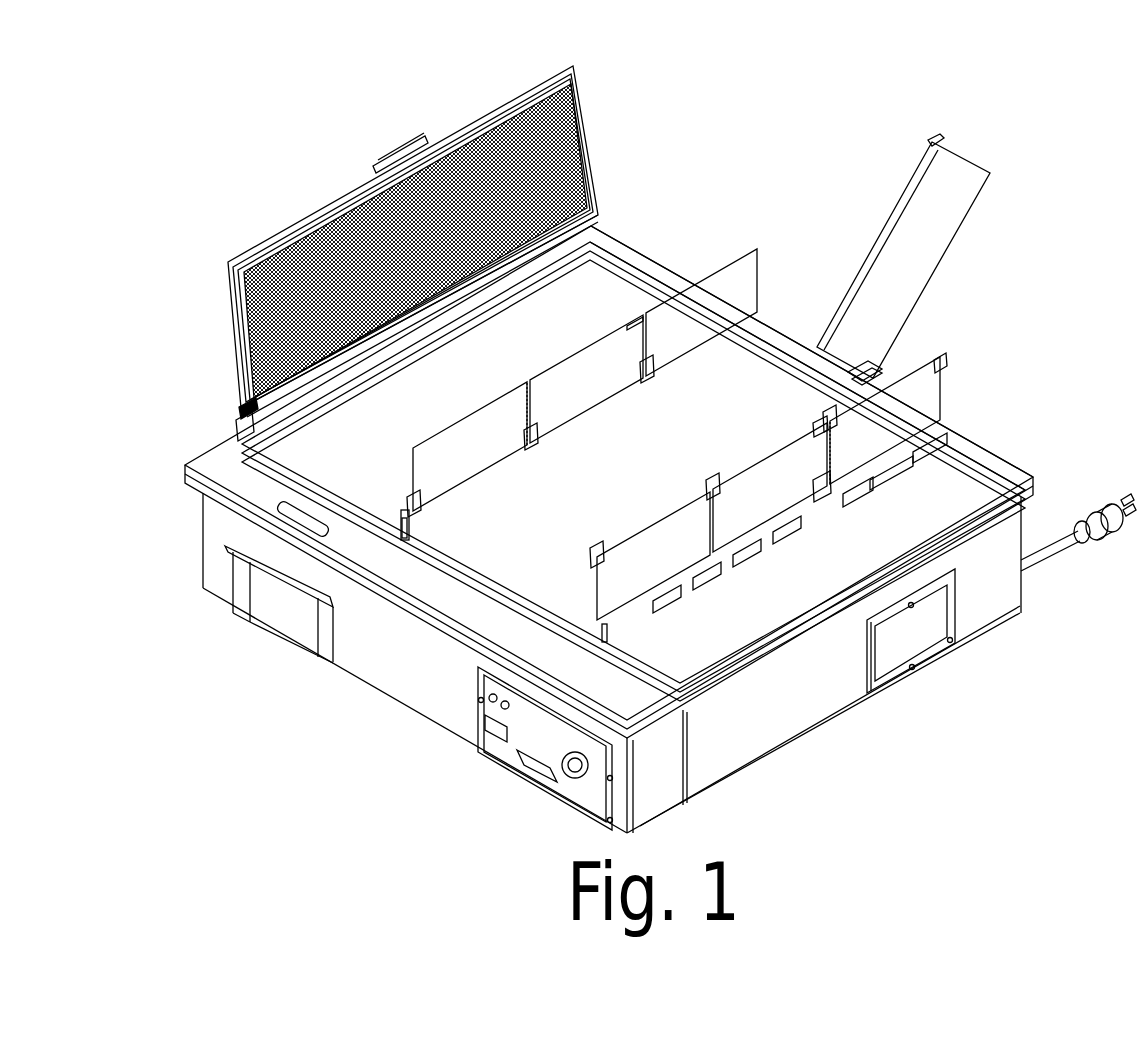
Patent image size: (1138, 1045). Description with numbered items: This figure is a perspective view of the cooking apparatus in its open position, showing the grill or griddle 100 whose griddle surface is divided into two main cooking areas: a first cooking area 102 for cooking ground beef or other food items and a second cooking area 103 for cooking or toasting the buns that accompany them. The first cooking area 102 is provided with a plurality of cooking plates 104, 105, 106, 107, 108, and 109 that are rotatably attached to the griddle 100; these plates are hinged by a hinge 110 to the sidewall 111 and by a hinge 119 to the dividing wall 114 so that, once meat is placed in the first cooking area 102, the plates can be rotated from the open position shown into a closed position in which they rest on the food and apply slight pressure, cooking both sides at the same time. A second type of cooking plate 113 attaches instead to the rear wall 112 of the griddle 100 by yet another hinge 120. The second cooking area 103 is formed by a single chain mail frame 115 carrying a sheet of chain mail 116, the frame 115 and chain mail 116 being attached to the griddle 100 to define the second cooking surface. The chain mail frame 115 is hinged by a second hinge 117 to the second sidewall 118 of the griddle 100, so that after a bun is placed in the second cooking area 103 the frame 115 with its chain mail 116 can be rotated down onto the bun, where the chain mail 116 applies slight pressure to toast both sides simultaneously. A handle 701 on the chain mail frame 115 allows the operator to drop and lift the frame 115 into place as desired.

The grill or griddle 100 is at (850, 90).
The first cooking area 102 is at (582, 505).
The second cooking area 103 is at (395, 413).
The cooking plate 104 is at (705, 303).
The cooking plate 105 is at (595, 378).
The cooking plate 106 is at (465, 455).
The cooking plate 107 is at (660, 553).
The cooking plate 108 is at (760, 487).
The cooking plate 109 is at (912, 398).
The hinge 110 is at (605, 625).
The sidewall 111 is at (935, 453).
The rear wall 112 is at (782, 345).
The cooking plate 113 is at (960, 180).
The dividing wall 114 is at (408, 518).
The chain mail frame 115 is at (342, 238).
The chain mail 116 is at (300, 230).
The second hinge 117 is at (233, 397).
The second sidewall 118 is at (243, 423).
The hinge 119 is at (405, 503).
The hinge 120 is at (877, 361).
The handle 701 is at (396, 140).